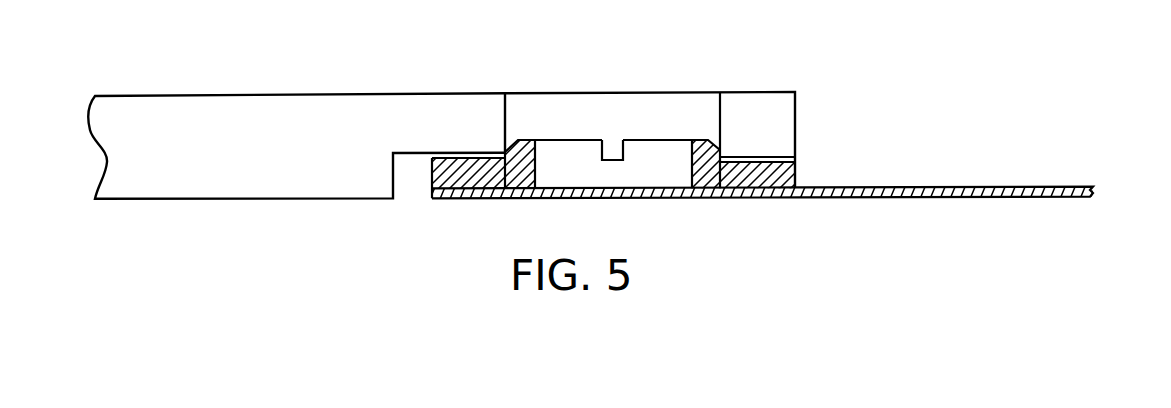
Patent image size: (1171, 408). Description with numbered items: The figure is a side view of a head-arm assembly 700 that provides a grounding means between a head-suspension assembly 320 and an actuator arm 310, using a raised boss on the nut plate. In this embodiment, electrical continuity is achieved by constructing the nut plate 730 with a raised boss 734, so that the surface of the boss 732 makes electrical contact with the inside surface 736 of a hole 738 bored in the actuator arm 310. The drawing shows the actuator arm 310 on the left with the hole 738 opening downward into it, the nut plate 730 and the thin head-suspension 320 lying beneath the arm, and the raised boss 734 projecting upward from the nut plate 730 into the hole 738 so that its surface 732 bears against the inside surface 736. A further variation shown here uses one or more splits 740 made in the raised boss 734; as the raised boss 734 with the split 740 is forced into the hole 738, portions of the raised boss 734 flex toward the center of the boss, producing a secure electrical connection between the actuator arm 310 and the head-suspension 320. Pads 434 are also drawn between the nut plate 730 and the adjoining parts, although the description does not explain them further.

The head-arm assembly 700 is at (924, 80).
The actuator arm 310 is at (298, 154).
The head-suspension assembly 320 is at (1023, 186).
The contact pad 434 is at (453, 155).
The nut plate 730 is at (430, 178).
The surface of the boss 732 is at (730, 150).
The raised boss 734 is at (667, 182).
The inside surface 736 is at (506, 107).
The hole 738 is at (596, 100).
The split 740 is at (613, 147).